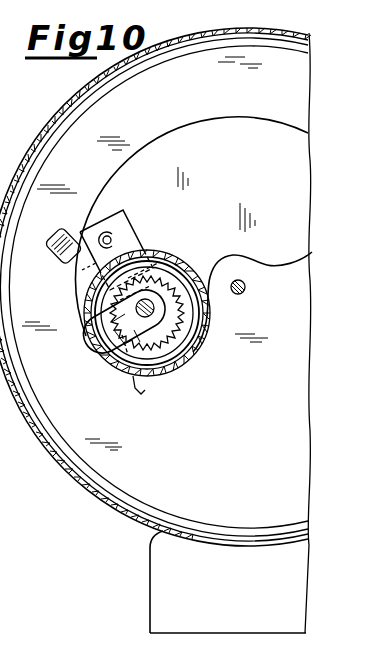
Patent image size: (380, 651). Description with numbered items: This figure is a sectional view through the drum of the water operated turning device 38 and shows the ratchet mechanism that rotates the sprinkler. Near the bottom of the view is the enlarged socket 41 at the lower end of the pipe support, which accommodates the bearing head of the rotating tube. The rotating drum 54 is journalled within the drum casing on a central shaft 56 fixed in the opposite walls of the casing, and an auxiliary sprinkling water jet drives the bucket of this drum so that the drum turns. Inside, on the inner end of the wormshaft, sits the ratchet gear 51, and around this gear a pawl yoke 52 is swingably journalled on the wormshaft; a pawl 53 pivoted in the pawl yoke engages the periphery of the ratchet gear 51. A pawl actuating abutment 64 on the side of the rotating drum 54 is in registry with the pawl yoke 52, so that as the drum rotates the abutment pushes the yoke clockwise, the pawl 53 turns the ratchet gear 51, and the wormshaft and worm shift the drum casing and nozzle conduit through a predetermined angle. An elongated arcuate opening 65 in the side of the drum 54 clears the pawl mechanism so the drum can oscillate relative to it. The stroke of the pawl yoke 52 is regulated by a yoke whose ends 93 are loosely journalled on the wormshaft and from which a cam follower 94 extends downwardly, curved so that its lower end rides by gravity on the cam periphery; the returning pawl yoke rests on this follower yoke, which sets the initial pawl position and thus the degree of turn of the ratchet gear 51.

The water operated turning device 38 is at (143, 492).
The enlarged socket 41 is at (151, 585).
The ratchet gear 51 is at (164, 283).
The pawl yoke 52 is at (122, 226).
The pawl 53 is at (82, 277).
The rotating drum 54 is at (240, 45).
The central shaft 56 is at (245, 290).
The pawl actuating abutment 64 is at (69, 231).
The elongated arcuate opening 65 is at (215, 125).
The yoke ends 93 is at (117, 330).
The cam follower 94 is at (138, 403).